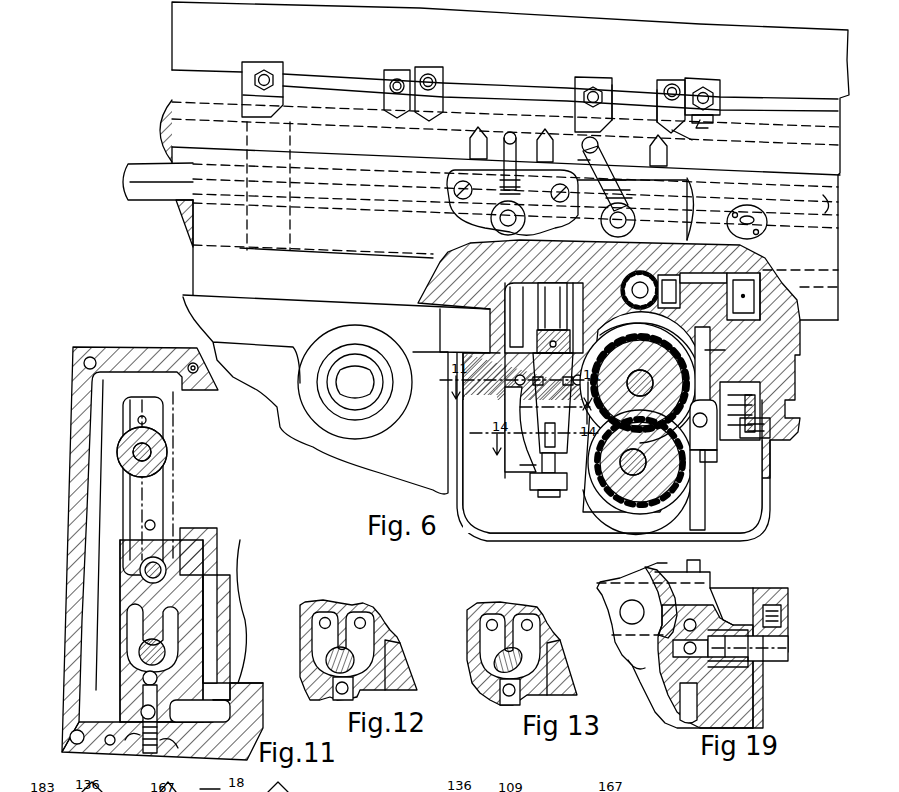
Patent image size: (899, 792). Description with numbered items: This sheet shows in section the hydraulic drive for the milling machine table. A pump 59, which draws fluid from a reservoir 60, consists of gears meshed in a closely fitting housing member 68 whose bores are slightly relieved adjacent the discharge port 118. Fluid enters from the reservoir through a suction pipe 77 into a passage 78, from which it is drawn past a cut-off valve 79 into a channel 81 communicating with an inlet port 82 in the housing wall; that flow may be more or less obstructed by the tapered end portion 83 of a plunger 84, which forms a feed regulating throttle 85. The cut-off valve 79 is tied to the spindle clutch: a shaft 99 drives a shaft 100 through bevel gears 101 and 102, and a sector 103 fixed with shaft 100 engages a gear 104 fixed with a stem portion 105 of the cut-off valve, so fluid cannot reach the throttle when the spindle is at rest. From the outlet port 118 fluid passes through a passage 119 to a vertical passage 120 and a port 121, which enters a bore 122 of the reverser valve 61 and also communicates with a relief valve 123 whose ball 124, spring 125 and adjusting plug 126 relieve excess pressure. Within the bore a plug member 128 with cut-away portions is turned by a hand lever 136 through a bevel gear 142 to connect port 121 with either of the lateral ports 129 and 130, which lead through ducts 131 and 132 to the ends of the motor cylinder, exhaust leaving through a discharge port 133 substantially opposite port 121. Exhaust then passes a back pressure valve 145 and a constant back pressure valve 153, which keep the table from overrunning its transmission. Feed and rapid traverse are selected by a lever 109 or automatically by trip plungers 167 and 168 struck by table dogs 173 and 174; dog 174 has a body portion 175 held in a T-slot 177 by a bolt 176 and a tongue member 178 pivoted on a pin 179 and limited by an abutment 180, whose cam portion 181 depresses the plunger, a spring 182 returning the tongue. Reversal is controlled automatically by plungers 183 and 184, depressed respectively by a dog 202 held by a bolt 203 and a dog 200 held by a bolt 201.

In FIG. 6, the pump 59 is at (585, 506).
In FIG. 6, the reservoir 60 is at (500, 532).
In FIG. 6, the reverser valve 61 is at (524, 460).
In FIG. 6, the housing member 68 is at (797, 368).
In FIG. 6, the suction pipe 77 is at (705, 503).
In FIG. 6, the passage 78 is at (714, 449).
In FIG. 19, the cut-off valve 79 is at (632, 665).
In FIG. 6, the channel 81 is at (725, 441).
In FIG. 6, the inlet port 82 is at (707, 460).
In FIG. 6, the tapered end portion 83 is at (716, 410).
In FIG. 6, the plunger 84 is at (710, 335).
In FIG. 6, the feed regulating throttle 85 is at (725, 350).
In FIG. 6, the shaft 99 is at (600, 333).
In FIG. 6, the shaft 100 is at (716, 308).
In FIG. 6, the bevel gear 101 is at (634, 283).
In FIG. 6, the bevel gear 102 is at (682, 312).
In FIG. 6, the sector 103 is at (745, 320).
In FIG. 6, the gear 104 is at (771, 434).
In FIG. 19, the gear 104 is at (715, 610).
In FIG. 19, the stem portion 105 is at (725, 660).
In FIG. 6, the lever 109 is at (602, 149).
In FIG. 6, the outlet port 118 is at (550, 478).
In FIG. 11, the outlet port 118 is at (210, 652).
In FIG. 11, the passage 119 is at (197, 693).
In FIG. 11, the passage 120 is at (109, 708).
In FIG. 11, the port 121 is at (124, 687).
In FIG. 12, the port 121 is at (310, 697).
In FIG. 13, the port 121 is at (495, 702).
In FIG. 11, the bore 122 is at (140, 653).
In FIG. 11, the relief valve 123 is at (140, 752).
In FIG. 11, the ball 124 is at (157, 713).
In FIG. 11, the spring 125 is at (182, 752).
In FIG. 11, the plug 126 is at (150, 753).
In FIG. 6, the plug member 128 is at (505, 446).
In FIG. 11, the plug member 128 is at (142, 656).
In FIG. 12, the plug member 128 is at (312, 690).
In FIG. 13, the plug member 128 is at (473, 685).
In FIG. 11, the port 129 is at (140, 655).
In FIG. 12, the port 129 is at (310, 659).
In FIG. 13, the port 129 is at (478, 662).
In FIG. 11, the port 130 is at (183, 648).
In FIG. 12, the port 130 is at (375, 640).
In FIG. 13, the port 130 is at (540, 660).
In FIG. 12, the duct 131 is at (312, 598).
In FIG. 13, the duct 131 is at (470, 630).
In FIG. 12, the duct 132 is at (362, 616).
In FIG. 13, the duct 132 is at (543, 625).
In FIG. 11, the discharge port 133 is at (163, 590).
In FIG. 12, the discharge port 133 is at (368, 600).
In FIG. 13, the discharge port 133 is at (508, 616).
In FIG. 6, the hand lever 136 is at (518, 124).
In FIG. 6, the bevel gear 142 is at (584, 300).
In FIG. 11, the back pressure valve 145 is at (192, 526).
In FIG. 11, the valve 153 is at (160, 420).
In FIG. 6, the trip plunger 167 is at (583, 152).
In FIG. 6, the trip plunger 168 is at (667, 152).
In FIG. 6, the dog 173 is at (414, 70).
In FIG. 6, the dog 174 is at (716, 82).
In FIG. 6, the body portion 175 is at (718, 100).
In FIG. 6, the bolt 176 is at (714, 116).
In FIG. 6, the T-slot 177 is at (516, 90).
In FIG. 6, the tongue member 178 is at (660, 92).
In FIG. 6, the pin 179 is at (686, 80).
In FIG. 6, the abutment 180 is at (700, 124).
In FIG. 6, the cam portion 181 is at (680, 136).
In FIG. 6, the spring 182 is at (674, 86).
In FIG. 6, the plunger 183 is at (470, 143).
In FIG. 6, the plunger 184 is at (545, 130).
In FIG. 6, the dog 200 is at (606, 82).
In FIG. 6, the bolt 201 is at (590, 80).
In FIG. 6, the dog 202 is at (258, 66).
In FIG. 6, the bolt 203 is at (245, 95).